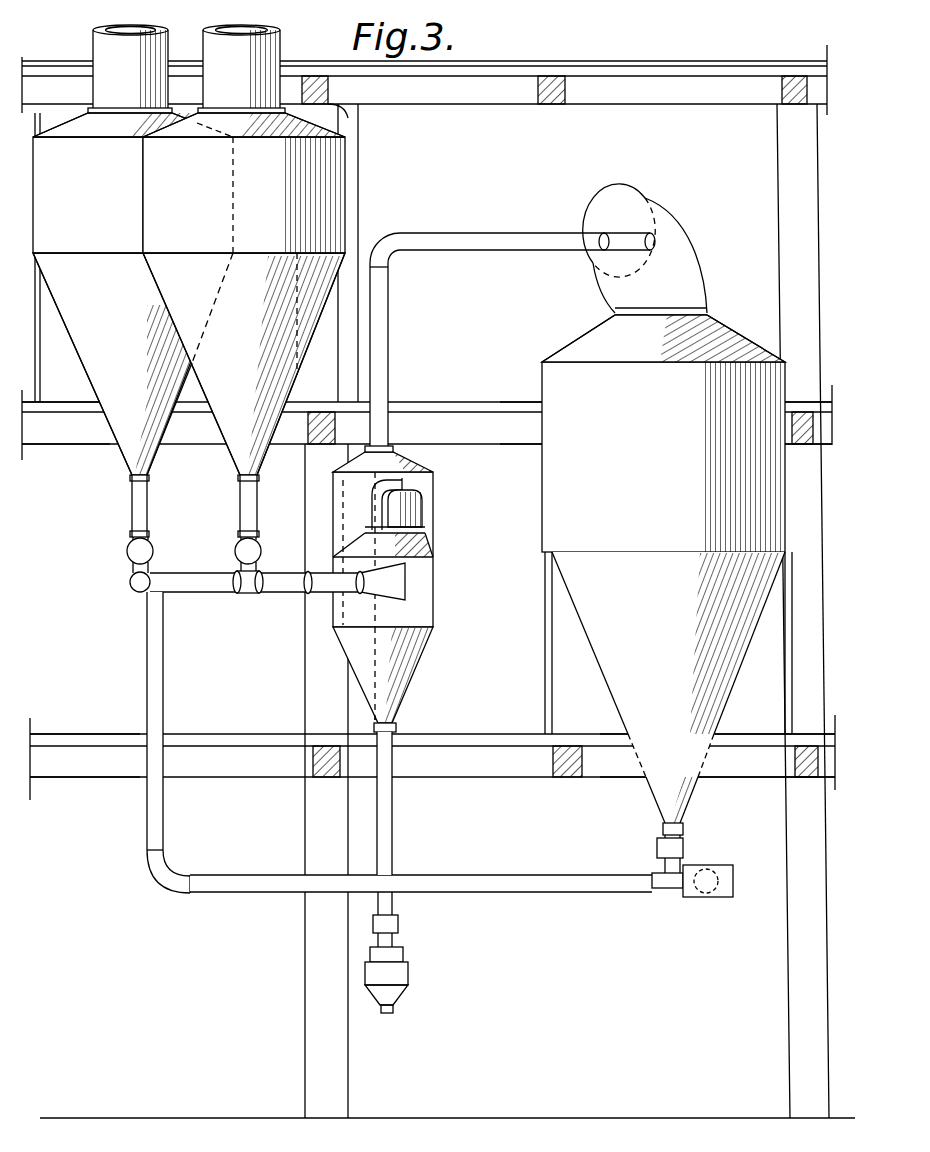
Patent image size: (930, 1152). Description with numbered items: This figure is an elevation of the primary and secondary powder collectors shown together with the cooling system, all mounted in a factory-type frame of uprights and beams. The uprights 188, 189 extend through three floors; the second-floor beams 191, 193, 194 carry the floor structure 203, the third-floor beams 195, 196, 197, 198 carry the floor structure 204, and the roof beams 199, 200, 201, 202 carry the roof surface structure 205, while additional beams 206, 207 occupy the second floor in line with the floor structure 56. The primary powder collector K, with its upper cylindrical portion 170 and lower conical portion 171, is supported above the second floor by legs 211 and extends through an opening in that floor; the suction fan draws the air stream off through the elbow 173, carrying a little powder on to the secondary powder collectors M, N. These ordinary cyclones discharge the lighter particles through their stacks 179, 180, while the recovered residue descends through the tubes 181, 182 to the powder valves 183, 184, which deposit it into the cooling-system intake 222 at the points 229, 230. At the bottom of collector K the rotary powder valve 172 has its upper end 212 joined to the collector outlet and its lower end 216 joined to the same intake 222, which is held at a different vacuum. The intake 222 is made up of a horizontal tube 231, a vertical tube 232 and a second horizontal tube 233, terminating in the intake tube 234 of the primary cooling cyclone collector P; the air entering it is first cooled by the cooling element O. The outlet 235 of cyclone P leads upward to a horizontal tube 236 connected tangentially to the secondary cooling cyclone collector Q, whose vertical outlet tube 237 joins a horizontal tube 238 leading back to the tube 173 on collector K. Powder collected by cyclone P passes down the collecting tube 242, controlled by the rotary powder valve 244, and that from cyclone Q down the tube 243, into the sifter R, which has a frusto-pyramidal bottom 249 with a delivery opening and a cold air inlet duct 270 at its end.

The floor 56 is at (458, 1118).
The upper cylindrical portion 170 is at (548, 488).
The lower conical portion 171 is at (620, 716).
The powder valve 172 is at (657, 849).
The elbow 173 is at (686, 259).
The stack 179 is at (95, 42).
The stack 180 is at (279, 42).
The tube 181 is at (131, 497).
The tube 182 is at (239, 497).
The powder valve 183 is at (127, 551).
The powder valve 184 is at (237, 548).
The upright 188 is at (790, 966).
The upright 189 is at (322, 950).
The beam 191 is at (808, 772).
The beam 193 is at (232, 780).
The beam 194 is at (320, 780).
The beam 195 is at (80, 437).
The beam 196 is at (526, 430).
The beam 197 is at (810, 445).
The beam 198 is at (309, 436).
The beam 199 is at (350, 108).
The beam 200 is at (612, 90).
The beam 201 is at (796, 94).
The beam 202 is at (46, 104).
The floor structure 203 is at (223, 740).
The floor structure 204 is at (445, 402).
The surface structure 205 is at (512, 62).
The beam 206 is at (560, 778).
The beam 207 is at (618, 765).
The legs 211 is at (548, 640).
The upper end 212 is at (684, 832).
The lower end 216 is at (668, 889).
The tubular intake 222 is at (567, 894).
The point 229 is at (130, 582).
The point 230 is at (250, 595).
The horizontal tube 231 is at (500, 875).
The vertical tube 232 is at (165, 693).
The second horizontal tube 233 is at (212, 586).
The intake tube 234 is at (326, 594).
The outlet 235 is at (392, 515).
The horizontal tube 236 is at (419, 491).
The tube 237 is at (388, 359).
The horizontal tube 238 is at (505, 225).
The collecting tube 242 is at (389, 822).
The tube 243 is at (395, 693).
The rotary powder valve 244 is at (399, 924).
The frusto-pyramidal bottom 249 is at (396, 1000).
The cold air inlet duct 270 is at (370, 958).
The secondary powder collector M is at (45, 212).
The secondary powder collector N is at (330, 192).
The primary powder collector K is at (643, 569).
The secondary cooling cyclone collector Q is at (366, 583).
The primary cooling cyclone collector P is at (412, 658).
The cooling element O is at (715, 898).
The sifter R is at (384, 974).